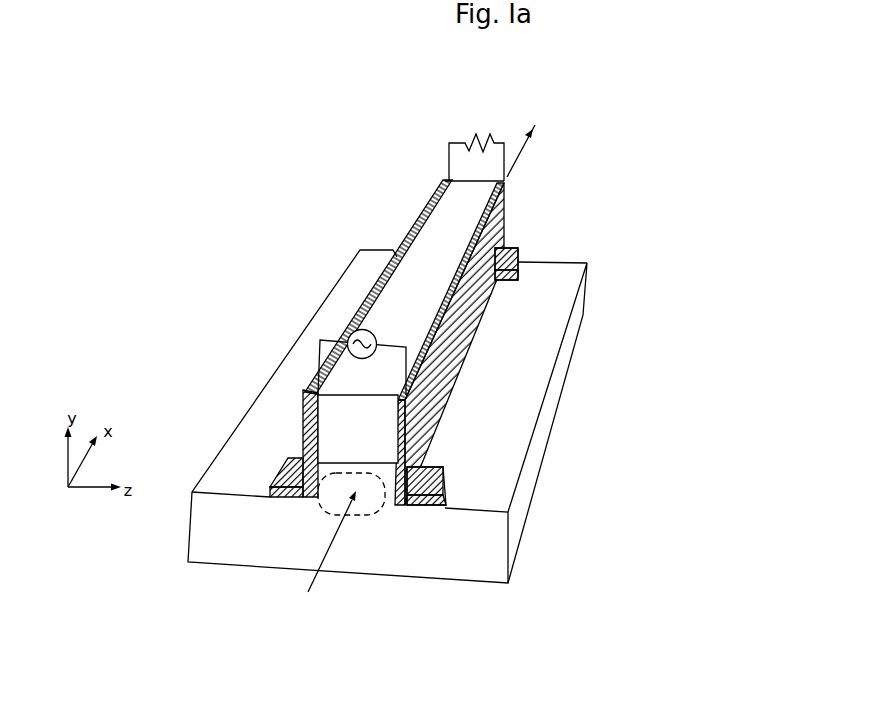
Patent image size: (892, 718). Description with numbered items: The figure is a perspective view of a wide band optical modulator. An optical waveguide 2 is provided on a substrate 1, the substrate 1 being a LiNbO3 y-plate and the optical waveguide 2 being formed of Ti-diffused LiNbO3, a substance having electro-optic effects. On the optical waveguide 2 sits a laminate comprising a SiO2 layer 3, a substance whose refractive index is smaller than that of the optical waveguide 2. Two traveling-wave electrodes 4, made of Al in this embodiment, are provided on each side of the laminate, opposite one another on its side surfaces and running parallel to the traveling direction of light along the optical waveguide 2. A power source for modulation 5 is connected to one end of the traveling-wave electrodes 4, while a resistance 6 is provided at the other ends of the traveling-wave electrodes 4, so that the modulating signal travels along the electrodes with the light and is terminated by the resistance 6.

The substrate 1 is at (438, 570).
The optical waveguide 2 is at (337, 507).
The SiO2 layer 3 is at (347, 445).
The traveling-wave electrodes 4 is at (387, 272).
The power source for modulation 5 is at (334, 326).
The resistance 6 is at (478, 136).